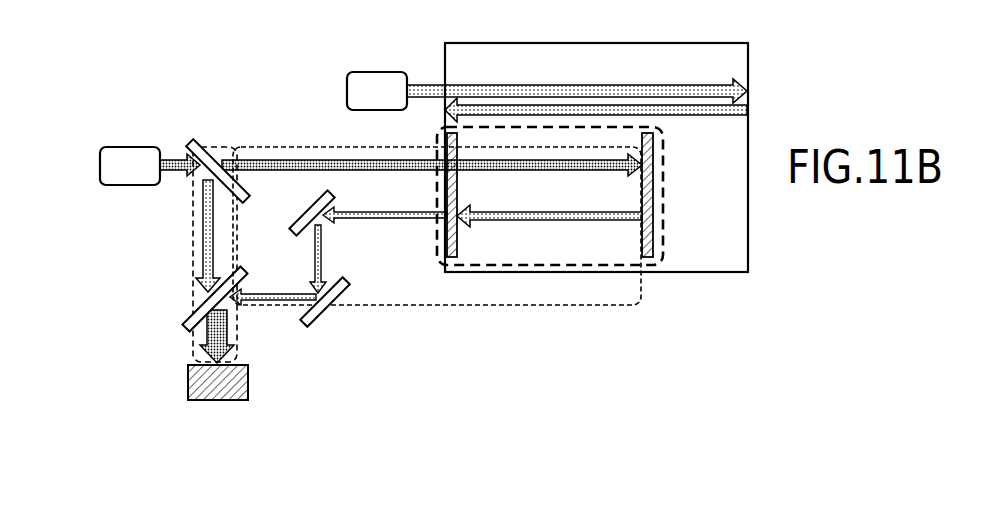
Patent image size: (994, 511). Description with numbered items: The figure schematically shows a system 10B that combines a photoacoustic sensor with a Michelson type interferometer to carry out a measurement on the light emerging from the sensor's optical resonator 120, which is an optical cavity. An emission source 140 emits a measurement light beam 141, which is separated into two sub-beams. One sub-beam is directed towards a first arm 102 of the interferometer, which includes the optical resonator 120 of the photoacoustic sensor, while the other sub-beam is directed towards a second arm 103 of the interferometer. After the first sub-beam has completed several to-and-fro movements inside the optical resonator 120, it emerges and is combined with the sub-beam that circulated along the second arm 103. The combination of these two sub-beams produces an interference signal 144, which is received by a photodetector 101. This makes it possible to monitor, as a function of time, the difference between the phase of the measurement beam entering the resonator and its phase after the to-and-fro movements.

The system 10B is at (779, 36).
The emission source 140 is at (100, 168).
The measurement light beam 141 is at (178, 160).
The second arm 103 is at (193, 243).
The interference signal 144 is at (205, 332).
The photodetector 101 is at (188, 392).
The first arm 102 is at (447, 305).
The optical resonator 120 is at (663, 200).